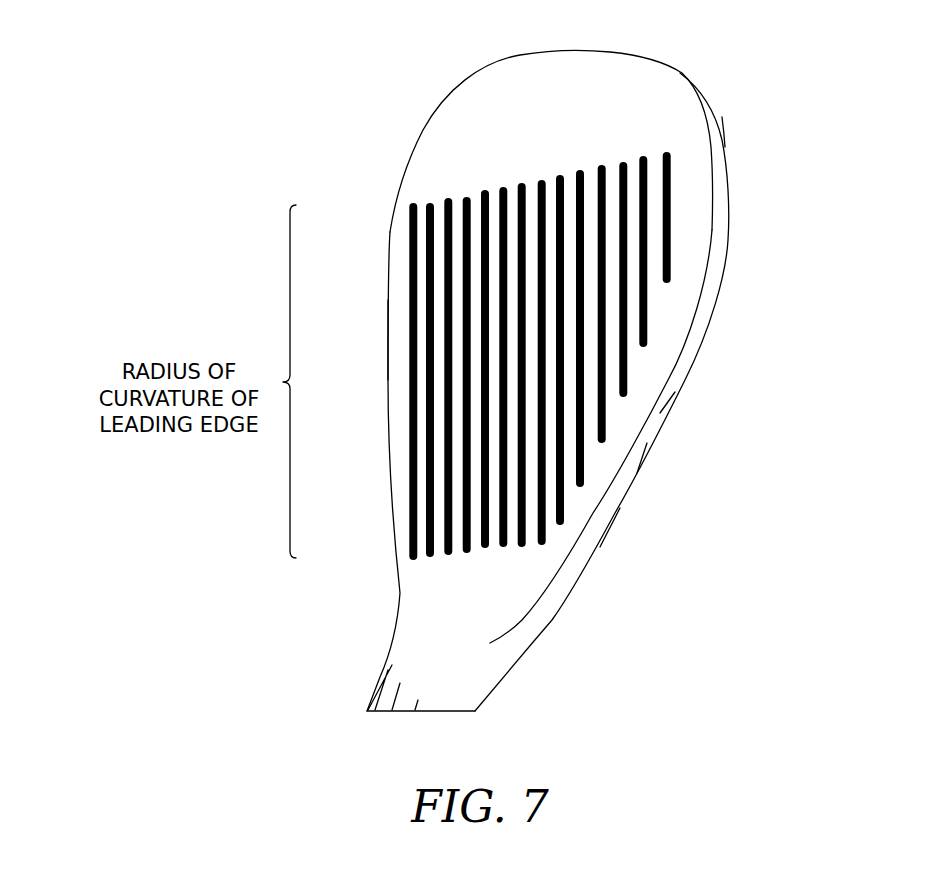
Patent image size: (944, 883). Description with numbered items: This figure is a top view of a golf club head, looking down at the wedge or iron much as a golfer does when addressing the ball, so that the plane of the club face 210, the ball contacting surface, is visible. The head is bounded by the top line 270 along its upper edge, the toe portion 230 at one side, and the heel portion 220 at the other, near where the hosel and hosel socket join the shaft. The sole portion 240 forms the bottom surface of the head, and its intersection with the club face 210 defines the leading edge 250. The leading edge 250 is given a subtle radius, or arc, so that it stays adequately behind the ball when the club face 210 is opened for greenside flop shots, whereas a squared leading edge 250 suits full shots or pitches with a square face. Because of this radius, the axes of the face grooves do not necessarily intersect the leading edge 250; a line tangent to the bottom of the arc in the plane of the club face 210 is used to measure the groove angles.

The club face 210 is at (593, 288).
The heel portion 220 is at (533, 641).
The toe portion 230 is at (487, 78).
The sole portion 240 is at (391, 487).
The leading edge 250 is at (387, 346).
The top line 270 is at (699, 341).